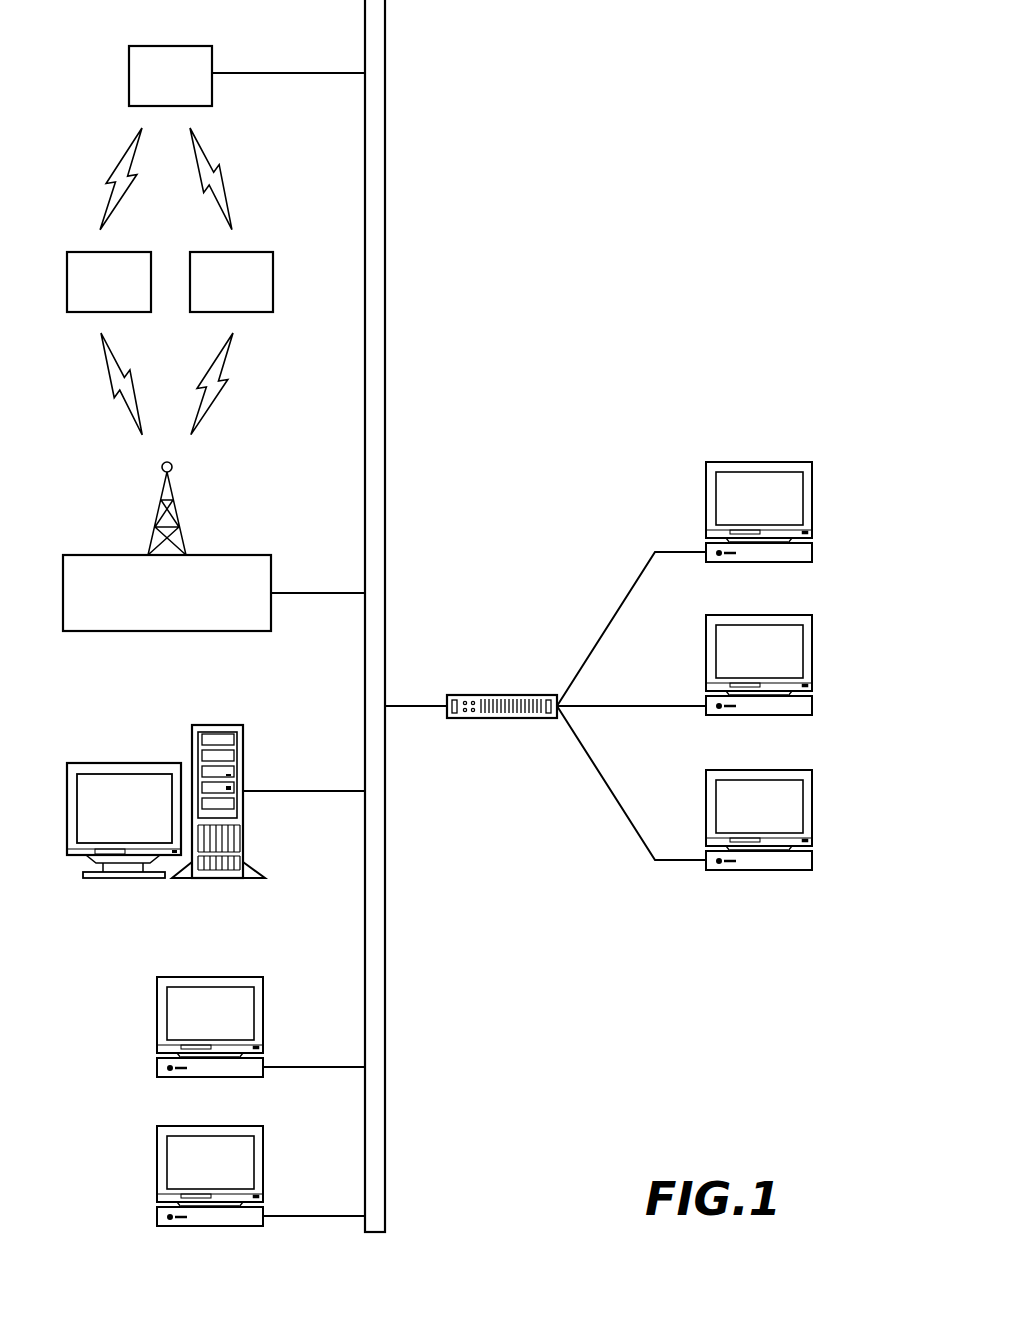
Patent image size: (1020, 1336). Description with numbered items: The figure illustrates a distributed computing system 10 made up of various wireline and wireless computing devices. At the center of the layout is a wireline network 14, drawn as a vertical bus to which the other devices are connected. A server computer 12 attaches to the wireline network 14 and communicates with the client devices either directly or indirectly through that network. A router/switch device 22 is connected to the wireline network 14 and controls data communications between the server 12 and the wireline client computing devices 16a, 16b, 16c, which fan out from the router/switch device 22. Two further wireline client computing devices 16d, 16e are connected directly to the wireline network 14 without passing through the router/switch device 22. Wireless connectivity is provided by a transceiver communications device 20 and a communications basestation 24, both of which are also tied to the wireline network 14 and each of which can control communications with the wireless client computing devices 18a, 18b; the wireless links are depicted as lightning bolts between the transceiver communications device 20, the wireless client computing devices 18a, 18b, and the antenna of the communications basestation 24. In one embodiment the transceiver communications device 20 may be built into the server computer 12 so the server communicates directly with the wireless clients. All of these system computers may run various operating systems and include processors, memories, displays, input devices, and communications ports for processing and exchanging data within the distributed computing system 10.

The distributed computing system 10 is at (758, 54).
The server computer 12 is at (191, 733).
The wireline network 14 is at (385, 30).
The wireline client computing device 16a is at (707, 490).
The wireline client computing device 16b is at (707, 655).
The wireline client computing device 16c is at (707, 797).
The wireline client computing device 16d is at (157, 1005).
The wireline client computing device 16e is at (157, 1155).
The wireless client computing device 18a is at (120, 297).
The wireless client computing device 18b is at (242, 297).
The transceiver communications device 20 is at (176, 90).
The router/switch device 22 is at (498, 694).
The communications basestation 24 is at (170, 598).